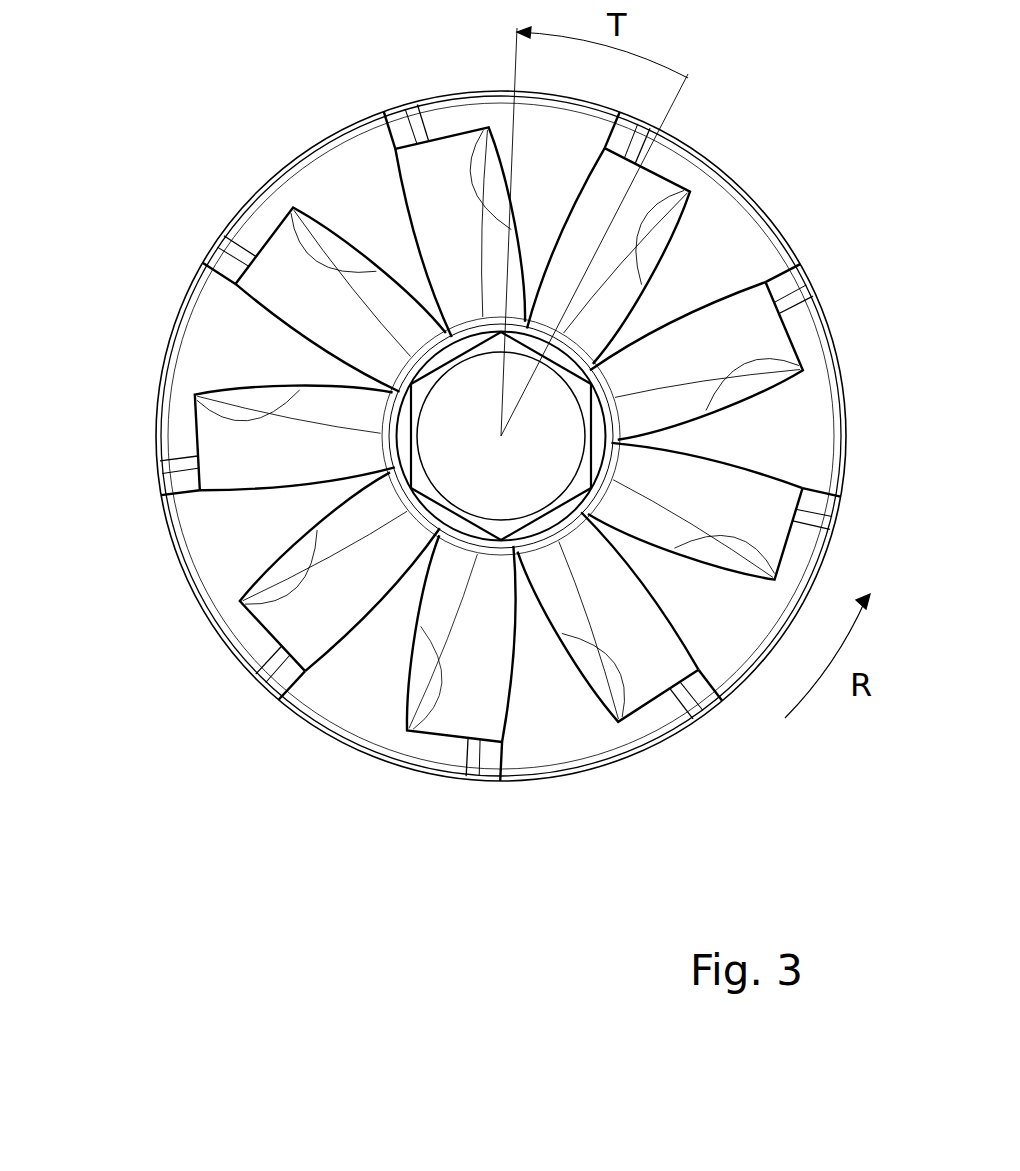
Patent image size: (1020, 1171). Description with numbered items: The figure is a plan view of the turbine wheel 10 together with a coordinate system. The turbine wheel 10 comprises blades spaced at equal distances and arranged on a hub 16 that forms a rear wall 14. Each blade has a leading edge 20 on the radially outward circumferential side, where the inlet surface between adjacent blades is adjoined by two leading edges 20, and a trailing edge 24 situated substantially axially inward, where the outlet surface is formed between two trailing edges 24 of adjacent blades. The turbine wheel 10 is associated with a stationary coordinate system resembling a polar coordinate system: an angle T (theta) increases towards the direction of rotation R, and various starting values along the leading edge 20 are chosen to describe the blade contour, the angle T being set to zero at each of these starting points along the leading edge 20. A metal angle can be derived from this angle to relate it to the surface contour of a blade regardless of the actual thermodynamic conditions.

The turbine wheel 10 is at (186, 762).
The rear wall 14 is at (345, 746).
The hub 16 is at (503, 560).
The leading edge 20 is at (203, 263).
The trailing edge 24 is at (385, 292).